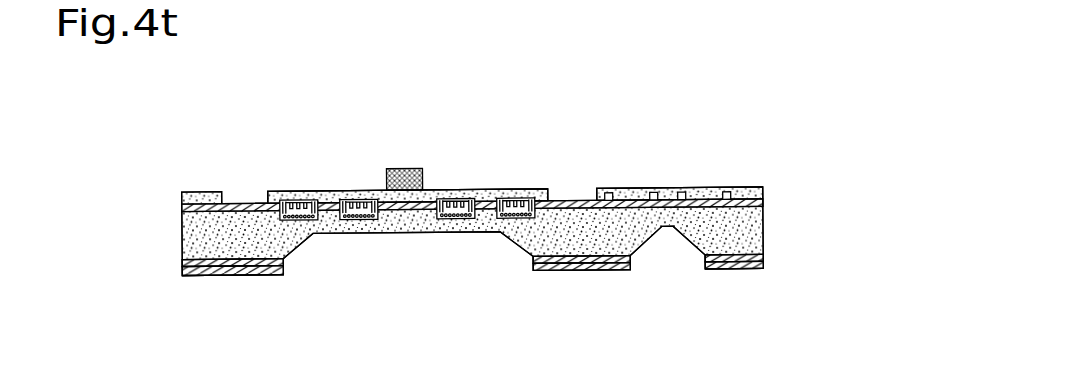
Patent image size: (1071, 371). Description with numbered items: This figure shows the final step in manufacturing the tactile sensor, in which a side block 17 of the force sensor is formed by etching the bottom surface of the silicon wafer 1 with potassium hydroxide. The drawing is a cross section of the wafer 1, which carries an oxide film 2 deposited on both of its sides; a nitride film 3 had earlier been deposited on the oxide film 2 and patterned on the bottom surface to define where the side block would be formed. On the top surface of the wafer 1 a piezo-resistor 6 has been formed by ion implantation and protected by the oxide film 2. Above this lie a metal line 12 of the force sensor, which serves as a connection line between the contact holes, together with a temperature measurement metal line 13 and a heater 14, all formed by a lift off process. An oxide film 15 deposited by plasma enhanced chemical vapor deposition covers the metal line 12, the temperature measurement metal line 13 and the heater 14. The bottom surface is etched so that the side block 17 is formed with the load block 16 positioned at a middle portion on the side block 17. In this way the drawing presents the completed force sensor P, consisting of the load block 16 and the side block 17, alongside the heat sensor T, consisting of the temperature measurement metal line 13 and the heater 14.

The silicon wafer 1 is at (753, 235).
The oxide film 2 is at (763, 193).
The nitride film 3 is at (745, 267).
The piezo-resistor 6 is at (362, 219).
The metal line 12 is at (350, 210).
The temperature measurement metal line 13 is at (609, 191).
The heater 14 is at (682, 191).
The oxide film 15 is at (454, 212).
The load block 16 is at (402, 167).
The side block 17 is at (438, 219).
The force sensor P is at (310, 181).
The heat sensor T is at (768, 167).